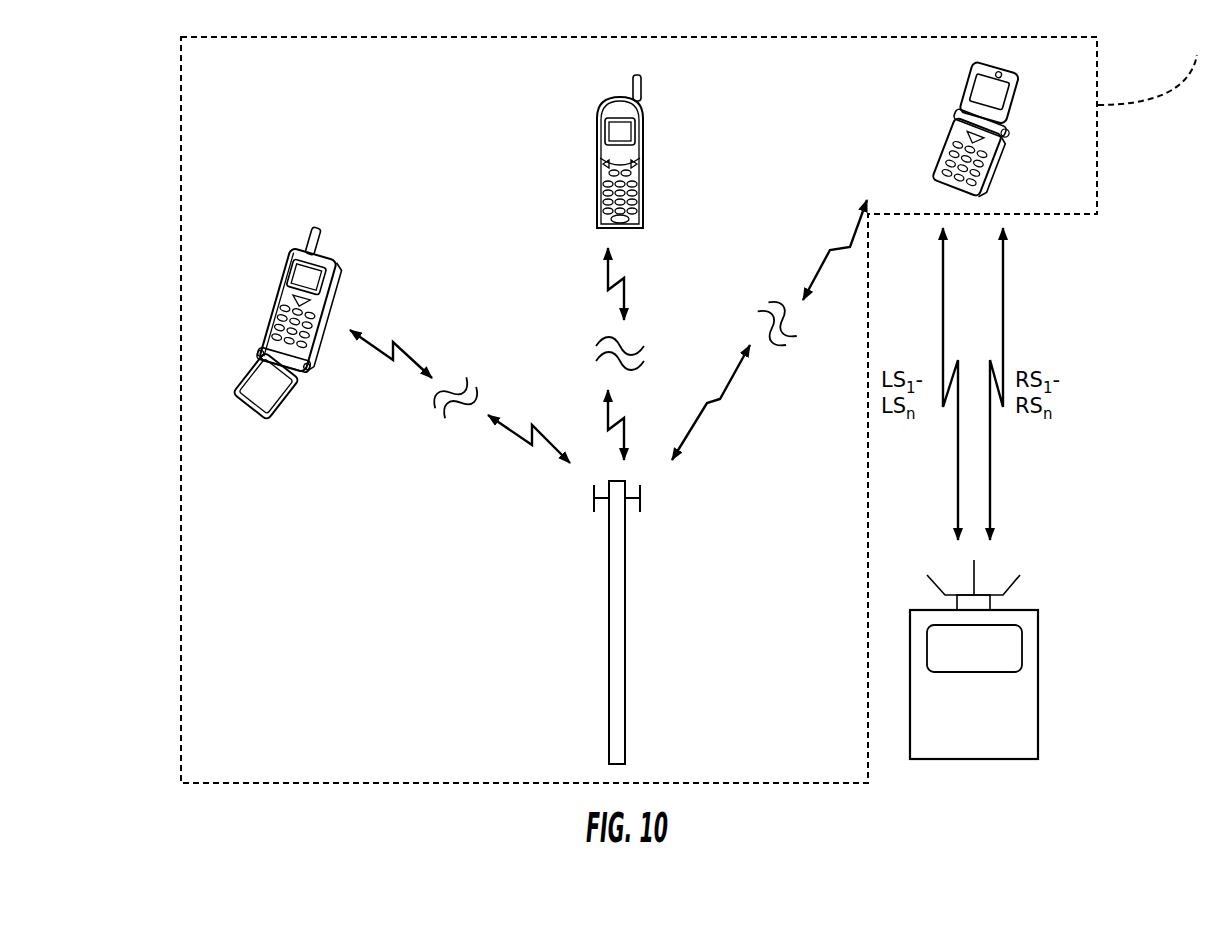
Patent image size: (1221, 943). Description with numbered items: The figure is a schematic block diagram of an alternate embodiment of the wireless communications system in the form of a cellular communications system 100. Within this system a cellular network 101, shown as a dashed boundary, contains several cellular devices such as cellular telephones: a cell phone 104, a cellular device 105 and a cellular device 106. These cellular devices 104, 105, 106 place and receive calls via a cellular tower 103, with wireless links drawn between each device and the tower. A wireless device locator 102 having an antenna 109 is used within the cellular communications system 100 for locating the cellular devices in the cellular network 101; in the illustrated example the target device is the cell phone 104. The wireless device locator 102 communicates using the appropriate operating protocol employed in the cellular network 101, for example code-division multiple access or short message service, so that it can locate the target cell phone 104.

The cellular communications system 100 is at (169, 45).
The cellular network 101 is at (1152, 63).
The wireless device locator 102 is at (1038, 685).
The cellular tower 103 is at (609, 583).
The cell phone 104 is at (960, 115).
The cellular device 105 is at (597, 128).
The cellular device 106 is at (328, 243).
The antenna 109 is at (1013, 583).